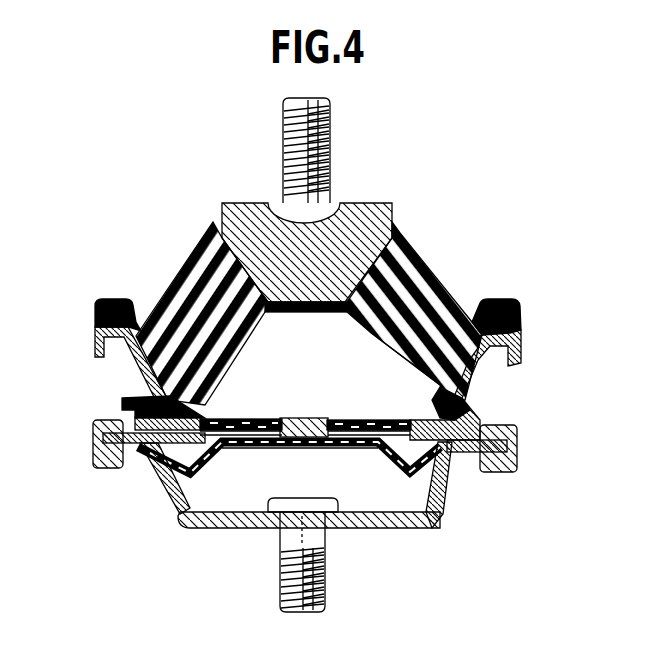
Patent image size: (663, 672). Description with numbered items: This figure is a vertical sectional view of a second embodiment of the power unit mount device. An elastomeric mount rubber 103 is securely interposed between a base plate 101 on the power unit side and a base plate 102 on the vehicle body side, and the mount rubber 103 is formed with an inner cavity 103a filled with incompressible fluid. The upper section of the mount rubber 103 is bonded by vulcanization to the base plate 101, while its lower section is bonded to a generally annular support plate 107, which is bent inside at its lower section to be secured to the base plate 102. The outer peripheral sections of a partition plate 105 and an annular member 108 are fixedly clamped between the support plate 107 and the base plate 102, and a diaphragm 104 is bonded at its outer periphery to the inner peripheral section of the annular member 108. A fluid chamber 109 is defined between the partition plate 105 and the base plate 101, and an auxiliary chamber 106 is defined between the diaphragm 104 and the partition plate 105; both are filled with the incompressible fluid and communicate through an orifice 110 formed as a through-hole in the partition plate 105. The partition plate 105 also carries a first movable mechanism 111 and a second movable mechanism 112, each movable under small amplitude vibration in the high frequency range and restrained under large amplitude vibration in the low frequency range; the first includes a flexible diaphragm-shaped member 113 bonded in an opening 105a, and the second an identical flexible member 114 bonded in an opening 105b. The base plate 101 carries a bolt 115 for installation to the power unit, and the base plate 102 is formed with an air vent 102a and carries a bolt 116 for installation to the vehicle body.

The base plate 101 is at (380, 217).
The base plate 102 is at (375, 529).
The air vent 102a is at (431, 530).
The mount rubber 103 is at (408, 262).
The cavity 103a is at (407, 330).
The diaphragm 104 is at (232, 441).
The partition plate 105 is at (457, 409).
The opening 105a is at (208, 404).
The opening 105b is at (393, 457).
The auxiliary chamber 106 is at (351, 447).
The support plate 107 is at (148, 380).
The annular member 108 is at (170, 447).
The fluid chamber 109 is at (237, 353).
The orifice 110 is at (313, 417).
The first movable mechanism 111 is at (272, 416).
The second movable mechanism 112 is at (389, 410).
The flexible diaphragm-shaped member 113 is at (275, 385).
The flexible diaphragm-shaped member 114 is at (338, 418).
The bolt 115 is at (331, 130).
The bolt 116 is at (326, 600).